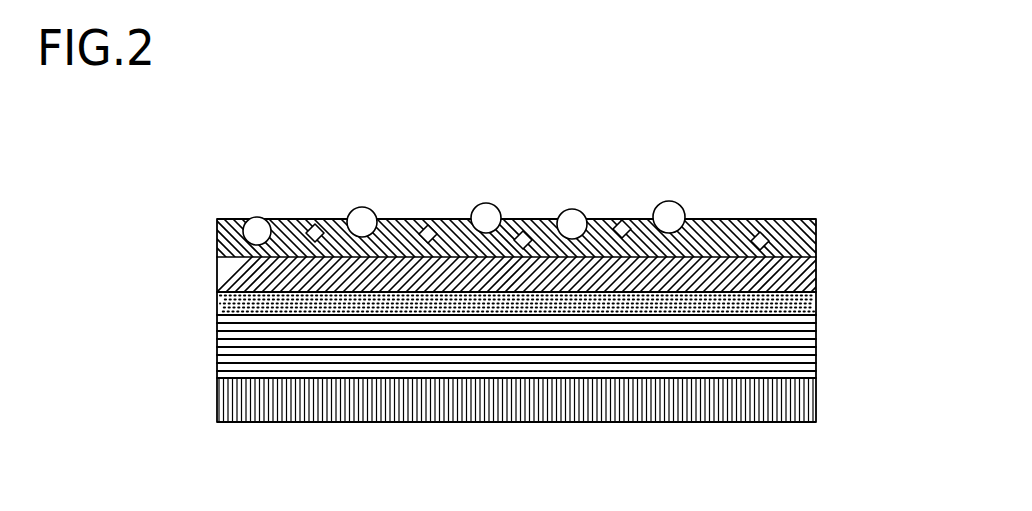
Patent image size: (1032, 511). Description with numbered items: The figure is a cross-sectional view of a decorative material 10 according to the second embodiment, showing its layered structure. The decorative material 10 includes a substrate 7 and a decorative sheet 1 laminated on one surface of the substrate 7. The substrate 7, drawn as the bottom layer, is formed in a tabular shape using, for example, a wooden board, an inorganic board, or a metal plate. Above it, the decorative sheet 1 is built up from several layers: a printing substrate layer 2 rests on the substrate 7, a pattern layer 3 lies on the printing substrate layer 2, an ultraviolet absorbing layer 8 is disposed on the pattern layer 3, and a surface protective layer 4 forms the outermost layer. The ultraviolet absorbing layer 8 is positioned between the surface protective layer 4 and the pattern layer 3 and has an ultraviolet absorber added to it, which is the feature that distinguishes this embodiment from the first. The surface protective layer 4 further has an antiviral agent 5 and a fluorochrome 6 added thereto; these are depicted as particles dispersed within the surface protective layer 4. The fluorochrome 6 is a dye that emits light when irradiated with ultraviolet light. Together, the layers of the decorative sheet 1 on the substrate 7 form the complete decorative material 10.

The decorative material 10 is at (214, 180).
The decorative sheet 1 is at (877, 192).
The printing substrate layer 2 is at (800, 347).
The pattern layer 3 is at (800, 310).
The ultraviolet absorbing layer 8 is at (816, 287).
The surface protective layer 4 is at (816, 221).
The antiviral agent 5 is at (366, 209).
The fluorochrome 6 is at (622, 224).
The substrate 7 is at (227, 395).